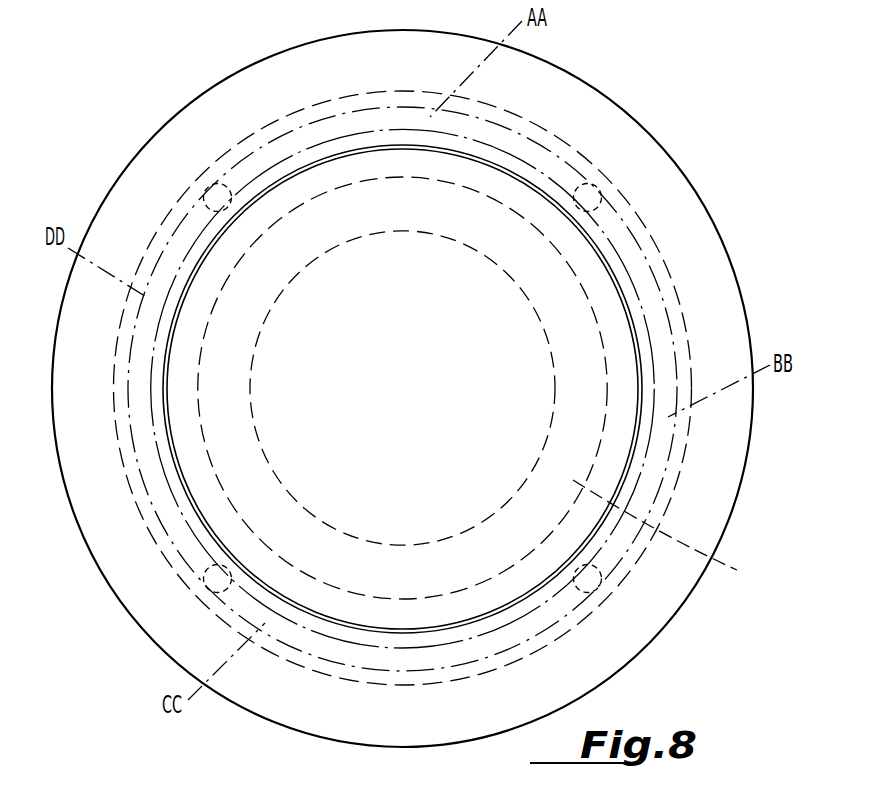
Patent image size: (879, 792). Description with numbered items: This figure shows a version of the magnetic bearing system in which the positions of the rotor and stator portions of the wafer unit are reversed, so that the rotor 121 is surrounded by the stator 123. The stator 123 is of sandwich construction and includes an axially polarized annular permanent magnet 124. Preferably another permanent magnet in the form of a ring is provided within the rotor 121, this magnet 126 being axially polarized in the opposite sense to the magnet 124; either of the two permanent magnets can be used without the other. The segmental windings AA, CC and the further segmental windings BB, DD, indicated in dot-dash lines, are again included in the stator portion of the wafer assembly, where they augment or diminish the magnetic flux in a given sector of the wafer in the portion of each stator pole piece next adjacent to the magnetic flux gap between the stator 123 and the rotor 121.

The rotor 121 is at (608, 283).
The stator 123 is at (743, 287).
The axially polarized annular permanent magnet 124 is at (722, 483).
The permanent magnet 126 is at (670, 535).